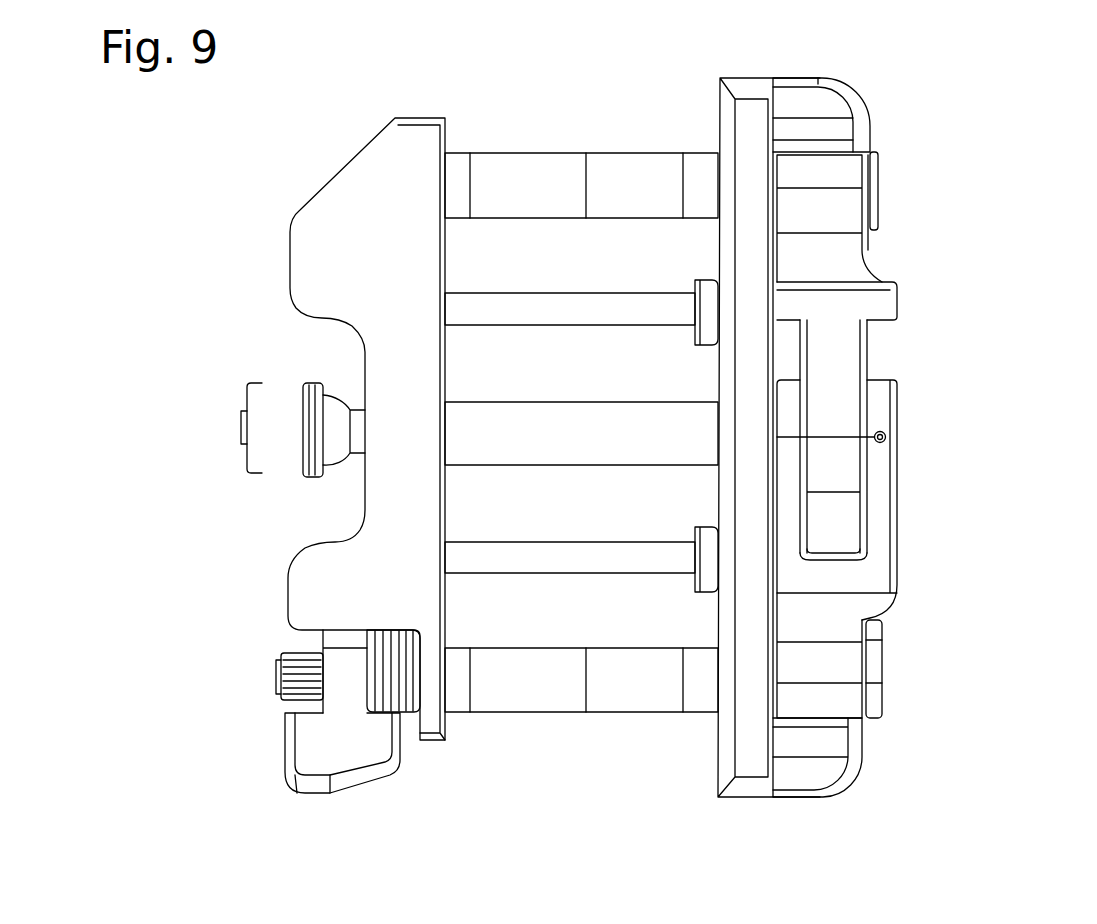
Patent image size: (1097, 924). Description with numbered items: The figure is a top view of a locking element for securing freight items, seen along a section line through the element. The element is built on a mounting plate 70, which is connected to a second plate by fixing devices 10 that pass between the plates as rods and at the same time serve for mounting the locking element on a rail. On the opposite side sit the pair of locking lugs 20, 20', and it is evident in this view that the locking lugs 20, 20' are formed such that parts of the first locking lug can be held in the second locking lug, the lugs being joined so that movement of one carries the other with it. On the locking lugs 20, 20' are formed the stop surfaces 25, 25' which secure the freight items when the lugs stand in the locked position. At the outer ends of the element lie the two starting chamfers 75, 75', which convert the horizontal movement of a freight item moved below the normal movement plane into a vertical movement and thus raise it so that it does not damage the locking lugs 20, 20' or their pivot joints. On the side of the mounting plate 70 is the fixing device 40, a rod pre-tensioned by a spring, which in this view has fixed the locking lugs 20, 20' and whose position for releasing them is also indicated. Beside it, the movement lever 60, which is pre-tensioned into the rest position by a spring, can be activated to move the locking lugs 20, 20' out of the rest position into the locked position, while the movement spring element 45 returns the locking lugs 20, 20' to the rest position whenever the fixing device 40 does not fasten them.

The fixing device 10 is at (618, 562).
The locking lug 20 is at (882, 500).
The locking lug 20' is at (902, 415).
The stop surface 25 is at (829, 655).
The stop surface 25' is at (829, 217).
The fixing device 40 is at (300, 468).
The movement spring element 45 is at (395, 735).
The movement lever 60 is at (283, 735).
The mounting plate 70 is at (505, 292).
The starting chamfer 75 is at (870, 753).
The starting chamfer 75' is at (875, 115).